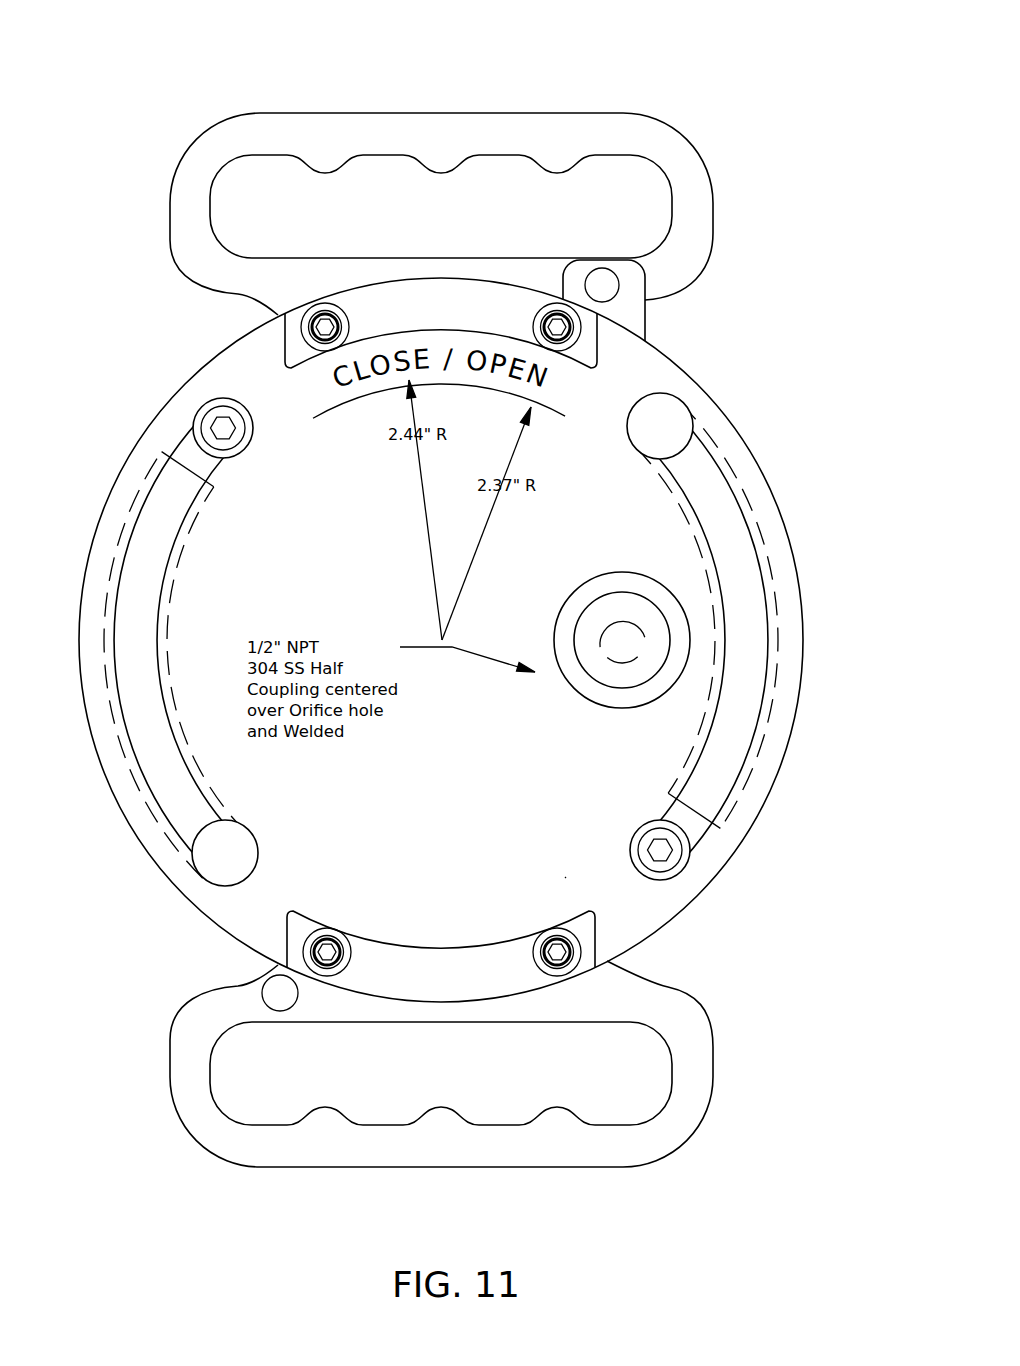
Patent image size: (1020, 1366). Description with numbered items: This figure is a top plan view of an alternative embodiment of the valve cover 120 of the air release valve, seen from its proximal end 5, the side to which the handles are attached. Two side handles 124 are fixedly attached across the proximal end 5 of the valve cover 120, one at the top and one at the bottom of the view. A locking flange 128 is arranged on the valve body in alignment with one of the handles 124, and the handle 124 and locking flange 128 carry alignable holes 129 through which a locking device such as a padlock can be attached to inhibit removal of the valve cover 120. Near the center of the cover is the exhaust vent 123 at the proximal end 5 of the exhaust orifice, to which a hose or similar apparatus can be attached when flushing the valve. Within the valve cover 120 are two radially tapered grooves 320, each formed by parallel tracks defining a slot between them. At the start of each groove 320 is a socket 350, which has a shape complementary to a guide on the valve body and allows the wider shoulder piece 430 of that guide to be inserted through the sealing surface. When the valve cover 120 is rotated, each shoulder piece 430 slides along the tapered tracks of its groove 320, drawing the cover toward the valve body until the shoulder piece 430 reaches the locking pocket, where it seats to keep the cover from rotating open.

The valve cover 120 is at (426, 640).
The handle 124 is at (460, 629).
The locking flange 128 is at (697, 293).
The alignable holes 129 is at (544, 244).
The radially tapered groove 320 is at (426, 640).
The socket 350 is at (438, 633).
The shoulder piece 430 is at (375, 625).
The exhaust vent 123 is at (712, 697).
The proximal end 5 is at (679, 927).